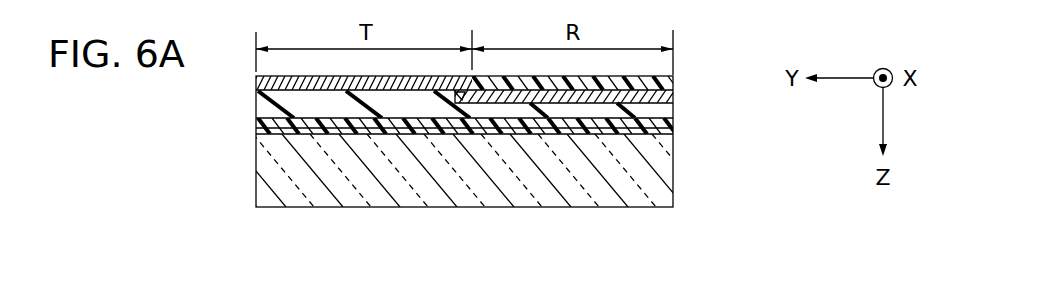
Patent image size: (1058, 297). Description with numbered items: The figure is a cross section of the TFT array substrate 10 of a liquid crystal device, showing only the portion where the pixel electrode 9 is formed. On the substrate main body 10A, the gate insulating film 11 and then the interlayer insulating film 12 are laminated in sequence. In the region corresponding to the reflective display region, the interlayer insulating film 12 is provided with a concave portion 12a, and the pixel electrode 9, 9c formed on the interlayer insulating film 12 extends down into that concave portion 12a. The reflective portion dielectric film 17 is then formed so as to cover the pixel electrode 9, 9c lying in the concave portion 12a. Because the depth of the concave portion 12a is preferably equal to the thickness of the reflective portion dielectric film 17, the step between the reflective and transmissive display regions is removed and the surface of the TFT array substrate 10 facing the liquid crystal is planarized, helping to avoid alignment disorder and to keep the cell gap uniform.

The TFT array substrate 10 is at (689, 53).
The substrate main body 10A is at (674, 181).
The gate insulating film 11 is at (674, 131).
The interlayer insulating film 12 is at (674, 118).
The concave portion 12a is at (463, 96).
The reflective portion dielectric film 17 is at (674, 84).
The pixel electrode 9c is at (594, 98).
The pixel electrode 9 is at (674, 97).